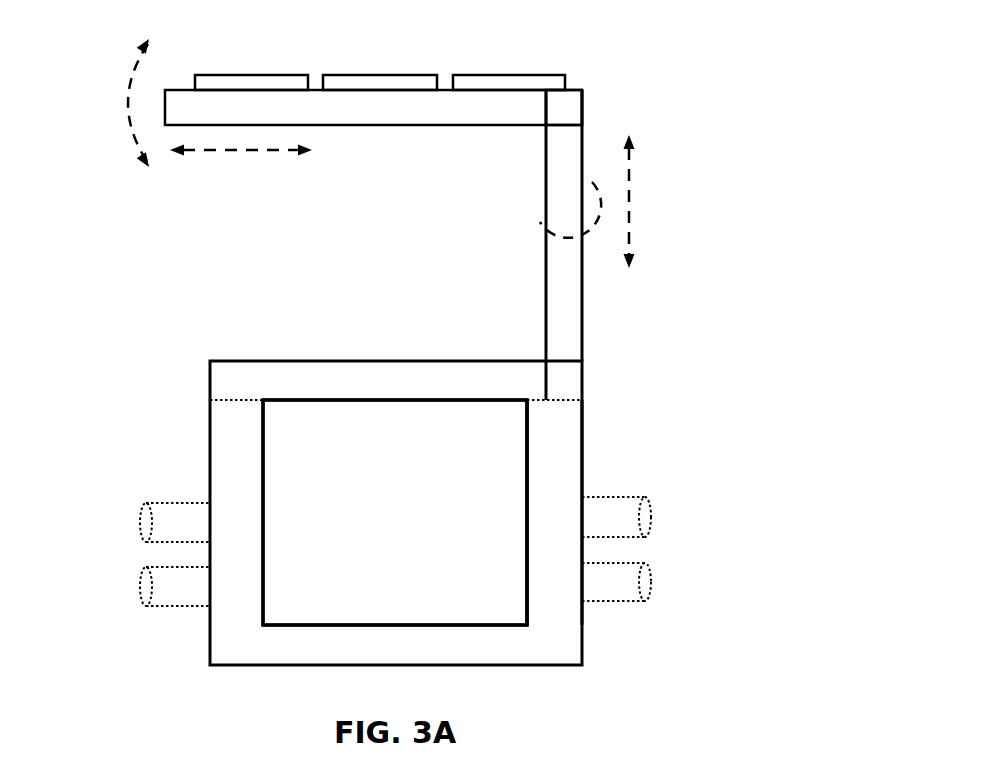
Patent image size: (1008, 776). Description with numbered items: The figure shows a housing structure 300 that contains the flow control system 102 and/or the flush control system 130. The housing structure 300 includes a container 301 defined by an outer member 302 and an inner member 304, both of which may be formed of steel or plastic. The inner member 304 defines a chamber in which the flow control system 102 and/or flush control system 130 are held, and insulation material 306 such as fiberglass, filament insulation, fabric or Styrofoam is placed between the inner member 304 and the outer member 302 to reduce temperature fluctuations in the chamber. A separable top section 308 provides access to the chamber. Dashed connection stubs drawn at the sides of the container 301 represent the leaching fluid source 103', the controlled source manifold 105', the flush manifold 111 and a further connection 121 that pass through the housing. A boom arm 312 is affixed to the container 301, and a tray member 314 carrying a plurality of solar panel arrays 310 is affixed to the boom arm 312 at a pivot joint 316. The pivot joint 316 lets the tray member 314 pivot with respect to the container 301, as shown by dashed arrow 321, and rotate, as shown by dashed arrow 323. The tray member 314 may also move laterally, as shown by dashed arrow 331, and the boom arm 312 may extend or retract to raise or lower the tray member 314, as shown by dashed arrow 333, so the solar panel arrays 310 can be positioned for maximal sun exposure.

The housing structure 300 is at (803, 43).
The container 301 is at (650, 390).
The outer member 302 is at (583, 463).
The inner member 304 is at (527, 593).
The insulation material 306 is at (560, 423).
The top section 308 is at (292, 375).
The solar panel arrays 310 is at (252, 82).
The boom arm 312 is at (563, 291).
The tray member 314 is at (345, 113).
The pivot joint 316 is at (563, 108).
The dashed arrow 321 is at (127, 95).
The dashed arrow 323 is at (533, 195).
The dashed arrow 331 is at (222, 152).
The dashed arrow 333 is at (630, 190).
The flow control system 102 is at (323, 524).
The flush control system 130 is at (323, 524).
The connector port 103' is at (175, 522).
The connector port 105' is at (616, 517).
The flush manifold 111 is at (175, 586).
The connector port 121 is at (616, 582).